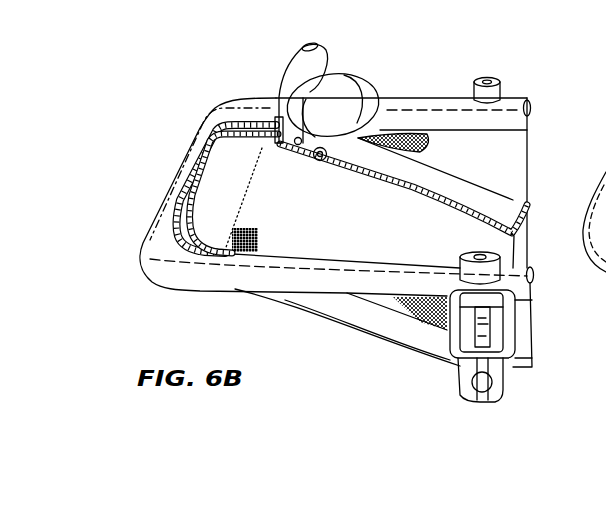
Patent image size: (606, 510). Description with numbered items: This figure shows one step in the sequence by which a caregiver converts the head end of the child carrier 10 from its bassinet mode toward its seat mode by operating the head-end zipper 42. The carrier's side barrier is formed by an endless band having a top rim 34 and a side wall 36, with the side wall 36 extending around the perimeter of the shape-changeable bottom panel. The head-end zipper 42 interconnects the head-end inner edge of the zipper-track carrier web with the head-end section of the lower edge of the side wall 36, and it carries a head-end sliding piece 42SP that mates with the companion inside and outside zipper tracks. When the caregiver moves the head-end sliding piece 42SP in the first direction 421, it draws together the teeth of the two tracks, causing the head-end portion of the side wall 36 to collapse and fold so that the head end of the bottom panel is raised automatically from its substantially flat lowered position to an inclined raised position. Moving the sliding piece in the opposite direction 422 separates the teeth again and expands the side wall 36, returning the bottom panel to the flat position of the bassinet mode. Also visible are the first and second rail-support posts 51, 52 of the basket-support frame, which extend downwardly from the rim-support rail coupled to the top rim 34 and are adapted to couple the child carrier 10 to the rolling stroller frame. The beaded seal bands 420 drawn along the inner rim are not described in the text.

The child carrier 10 is at (212, 88).
The top rim 34 is at (220, 278).
The side wall 36 is at (369, 323).
The head-end zipper 42 is at (338, 184).
The outer seal band 420 is at (183, 164).
The first direction 421 is at (193, 207).
The opposite direction 422 is at (397, 198).
The head-end sliding piece 42SP is at (285, 94).
The first rail-support post 51 is at (448, 378).
The second rail-support post 52 is at (518, 84).